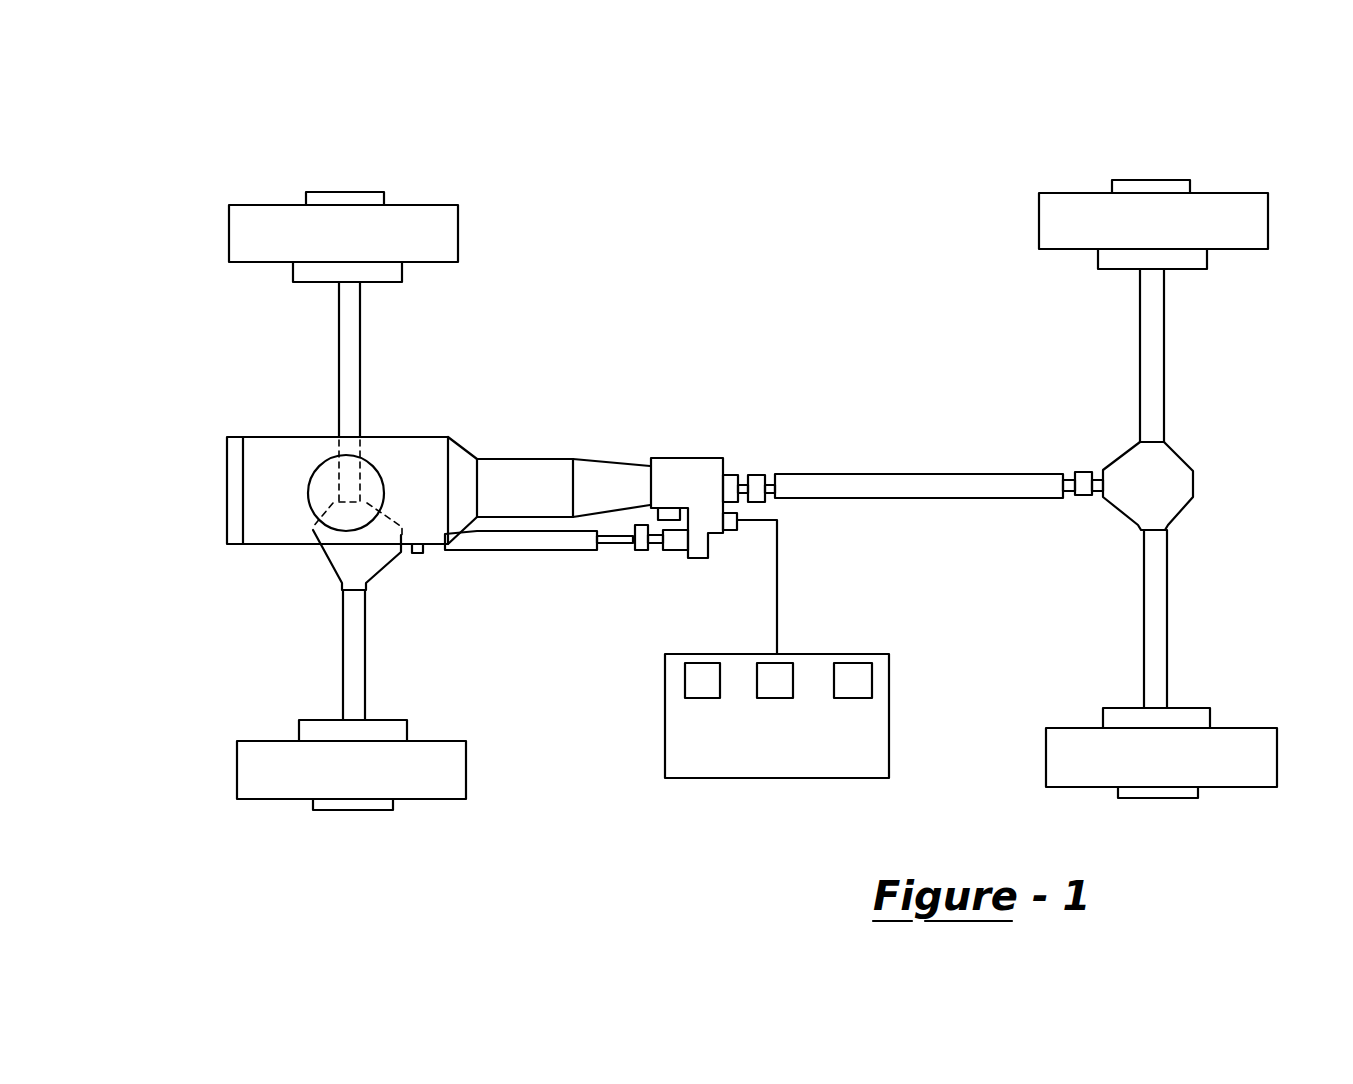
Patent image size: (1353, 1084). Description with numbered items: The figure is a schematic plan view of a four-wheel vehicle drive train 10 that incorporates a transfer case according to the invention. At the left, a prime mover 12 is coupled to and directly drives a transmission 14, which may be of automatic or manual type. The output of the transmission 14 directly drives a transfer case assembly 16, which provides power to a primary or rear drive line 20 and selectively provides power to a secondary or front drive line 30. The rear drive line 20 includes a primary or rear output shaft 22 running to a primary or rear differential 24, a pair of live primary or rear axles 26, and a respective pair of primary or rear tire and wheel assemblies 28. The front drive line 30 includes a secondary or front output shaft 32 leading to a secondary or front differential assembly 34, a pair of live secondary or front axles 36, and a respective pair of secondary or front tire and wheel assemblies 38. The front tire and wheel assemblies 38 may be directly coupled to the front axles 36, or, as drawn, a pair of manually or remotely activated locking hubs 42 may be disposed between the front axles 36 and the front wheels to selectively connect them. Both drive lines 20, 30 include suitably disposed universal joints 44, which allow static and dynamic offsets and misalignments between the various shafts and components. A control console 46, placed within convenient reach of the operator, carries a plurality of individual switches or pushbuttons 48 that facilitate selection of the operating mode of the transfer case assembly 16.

The four-wheel vehicle drive train 10 is at (735, 248).
The prime mover 12 is at (258, 488).
The transmission 14 is at (522, 480).
The transfer case assembly 16 is at (687, 455).
The primary or rear drive line 20 is at (940, 348).
The primary or rear output shaft 22 is at (943, 470).
The primary or rear differential 24 is at (1177, 475).
The primary or rear axles 26 is at (1165, 353).
The primary or rear tire and wheel assemblies 28 is at (1150, 180).
The secondary or front drive line 30 is at (168, 578).
The secondary or front output shaft 32 is at (518, 552).
The secondary or front differential assembly 34 is at (340, 568).
The secondary or front axles 36 is at (347, 342).
The secondary or front tire and wheel assemblies 38 is at (208, 203).
The locking hubs 42 is at (353, 192).
The universal joints 44 is at (760, 475).
The control console 46 is at (787, 778).
The switches or pushbuttons 48 is at (787, 661).